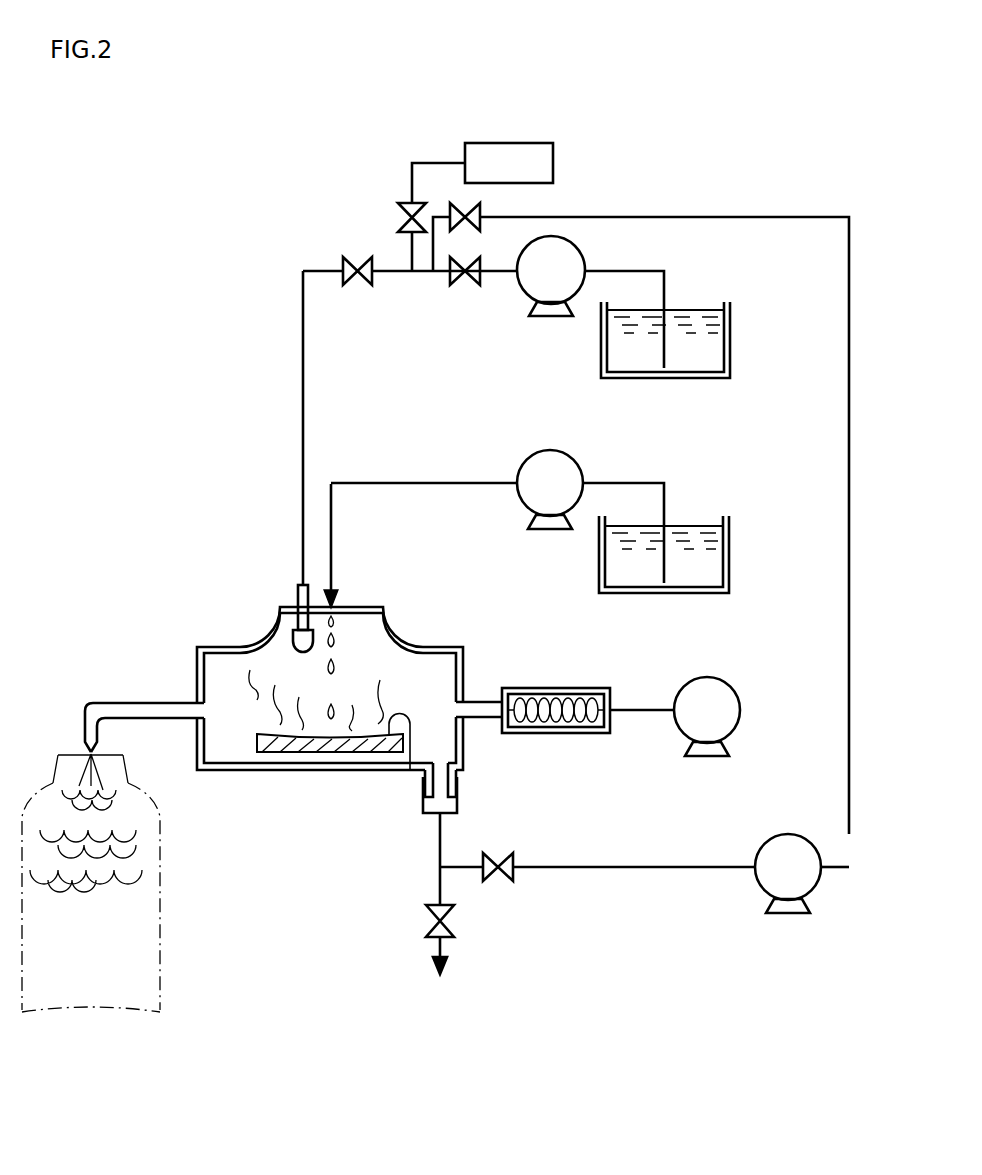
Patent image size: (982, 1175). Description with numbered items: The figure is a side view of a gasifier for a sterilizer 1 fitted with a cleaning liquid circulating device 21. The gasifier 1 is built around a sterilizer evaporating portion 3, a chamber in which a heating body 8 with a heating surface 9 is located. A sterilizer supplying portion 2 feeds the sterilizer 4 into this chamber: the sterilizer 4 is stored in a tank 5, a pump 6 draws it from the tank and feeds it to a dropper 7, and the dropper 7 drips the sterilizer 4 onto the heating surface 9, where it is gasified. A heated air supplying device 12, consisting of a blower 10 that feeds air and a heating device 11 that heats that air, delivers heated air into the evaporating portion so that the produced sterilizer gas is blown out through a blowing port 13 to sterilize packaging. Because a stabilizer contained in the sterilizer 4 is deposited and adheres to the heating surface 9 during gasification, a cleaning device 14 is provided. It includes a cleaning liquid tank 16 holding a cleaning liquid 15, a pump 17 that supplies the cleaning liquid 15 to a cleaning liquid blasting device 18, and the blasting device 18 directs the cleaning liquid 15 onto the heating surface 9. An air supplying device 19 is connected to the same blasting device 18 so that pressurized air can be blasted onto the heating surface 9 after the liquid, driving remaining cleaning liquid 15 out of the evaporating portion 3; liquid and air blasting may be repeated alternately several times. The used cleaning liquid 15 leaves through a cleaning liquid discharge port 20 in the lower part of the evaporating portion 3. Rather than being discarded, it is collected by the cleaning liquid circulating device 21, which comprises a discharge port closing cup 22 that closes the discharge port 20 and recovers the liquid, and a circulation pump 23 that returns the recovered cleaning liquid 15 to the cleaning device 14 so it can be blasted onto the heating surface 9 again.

The gasifier for a sterilizer 1 is at (216, 536).
The sterilizer supplying portion 2 is at (382, 450).
The sterilizer evaporating portion 3 is at (423, 642).
The sterilizer 4 is at (689, 526).
The tank 5 is at (730, 555).
The pump 6 is at (552, 450).
The dropper 7 is at (335, 606).
The heating body 8 is at (316, 753).
The heating surface 9 is at (410, 770).
The blower 10 is at (742, 700).
The heating device 11 is at (546, 734).
The heated air supplying device 12 is at (758, 787).
The blowing port 13 is at (84, 724).
The cleaning device 14 is at (308, 237).
The cleaning liquid 15 is at (688, 312).
The cleaning liquid tank 16 is at (731, 341).
The pump 17 is at (580, 248).
The cleaning liquid blasting device 18 is at (295, 636).
The air supplying device 19 is at (510, 143).
The cleaning liquid discharge port 20 is at (453, 786).
The cleaning liquid circulating device 21 is at (614, 897).
The discharge port closing cup 22 is at (456, 804).
The circulation pump 23 is at (762, 890).